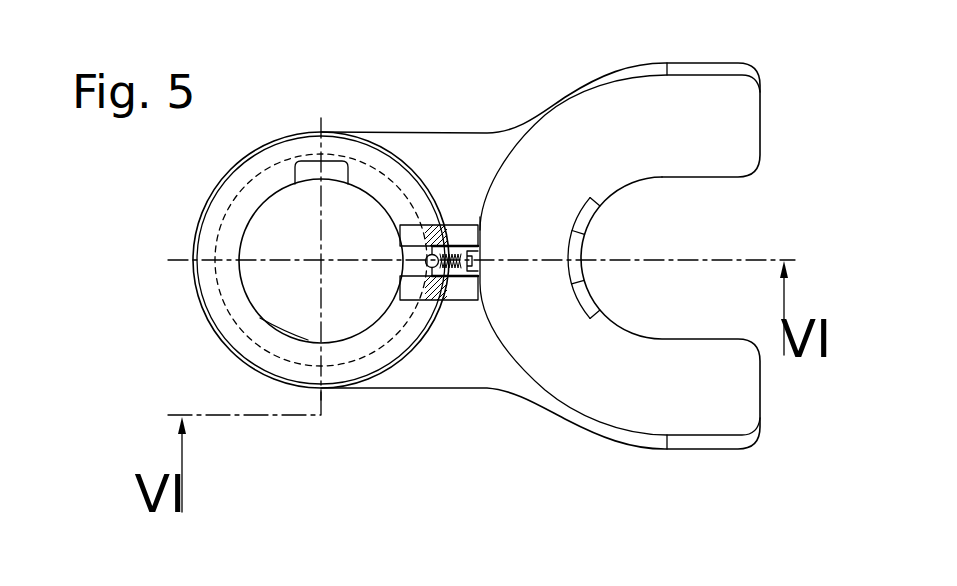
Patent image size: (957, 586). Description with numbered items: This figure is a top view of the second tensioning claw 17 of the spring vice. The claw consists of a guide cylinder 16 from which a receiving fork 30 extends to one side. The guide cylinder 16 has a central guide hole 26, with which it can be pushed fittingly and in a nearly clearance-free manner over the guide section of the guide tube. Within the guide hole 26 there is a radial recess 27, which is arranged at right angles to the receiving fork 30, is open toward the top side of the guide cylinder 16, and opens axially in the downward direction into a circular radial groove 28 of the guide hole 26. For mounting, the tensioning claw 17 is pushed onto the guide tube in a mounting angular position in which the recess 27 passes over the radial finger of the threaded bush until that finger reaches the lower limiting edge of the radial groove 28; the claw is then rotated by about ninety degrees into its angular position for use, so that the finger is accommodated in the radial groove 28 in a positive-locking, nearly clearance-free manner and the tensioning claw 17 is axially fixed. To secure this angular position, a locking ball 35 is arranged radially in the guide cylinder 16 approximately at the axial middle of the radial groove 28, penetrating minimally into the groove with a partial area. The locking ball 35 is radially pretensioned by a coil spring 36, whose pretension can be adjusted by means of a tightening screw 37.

The guide cylinder 16 is at (213, 213).
The second tensioning claw 17 is at (466, 374).
The guide hole 26 is at (262, 327).
The radial recess 27 is at (330, 172).
The radial groove 28 is at (405, 297).
The receiving fork 30 is at (728, 138).
The locking ball 35 is at (426, 258).
The coil spring 36 is at (478, 240).
The tightening screw 37 is at (480, 268).